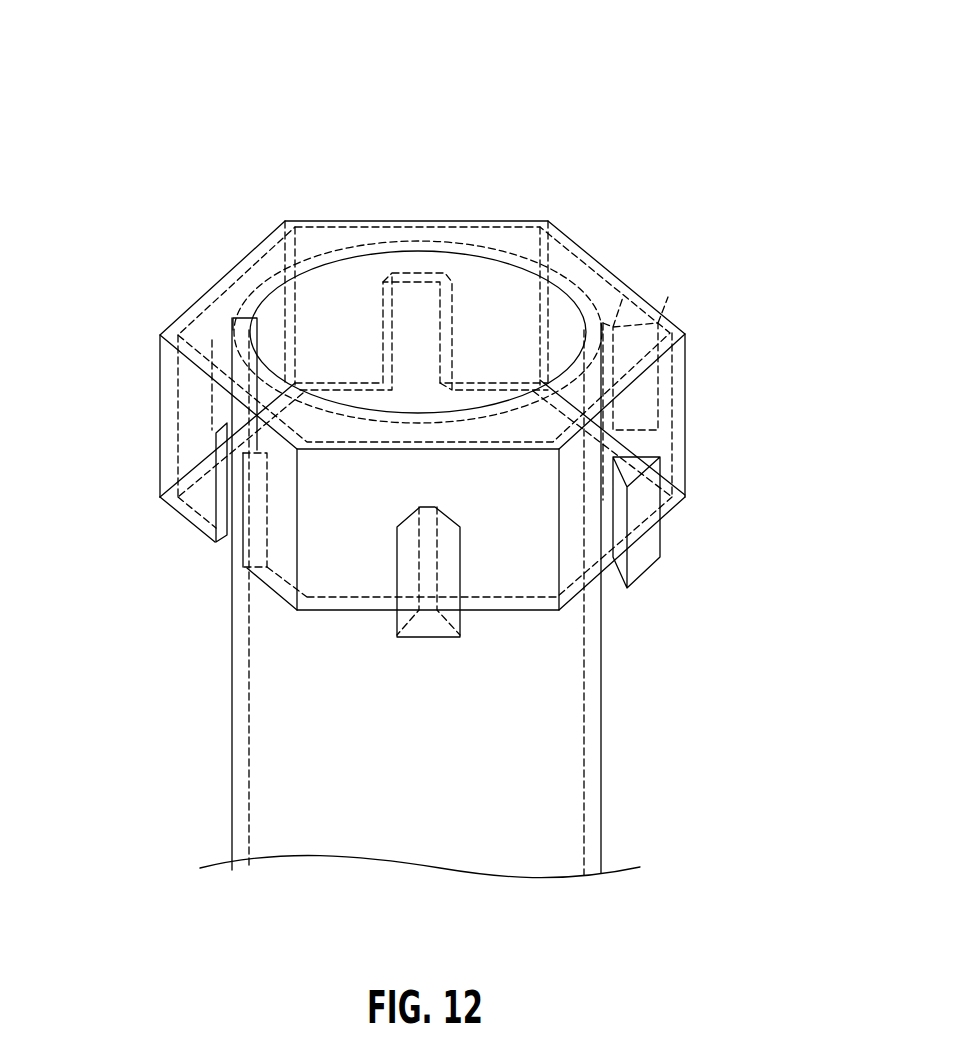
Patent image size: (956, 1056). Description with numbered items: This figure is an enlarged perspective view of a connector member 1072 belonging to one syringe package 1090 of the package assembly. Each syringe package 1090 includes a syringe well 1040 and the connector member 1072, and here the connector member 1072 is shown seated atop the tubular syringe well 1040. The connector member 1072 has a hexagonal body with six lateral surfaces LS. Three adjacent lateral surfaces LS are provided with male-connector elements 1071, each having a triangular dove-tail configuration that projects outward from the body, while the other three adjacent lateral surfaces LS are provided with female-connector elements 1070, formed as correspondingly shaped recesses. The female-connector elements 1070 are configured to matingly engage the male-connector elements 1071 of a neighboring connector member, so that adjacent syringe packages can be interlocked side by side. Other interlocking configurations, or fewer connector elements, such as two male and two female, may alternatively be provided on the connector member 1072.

The syringe package 1090 is at (580, 92).
The connector member 1072 is at (640, 262).
The female-connector element 1070 is at (412, 308).
The male-connector element 1071 is at (648, 402).
The syringe well 1040 is at (190, 760).
The lateral surface LS is at (195, 281).